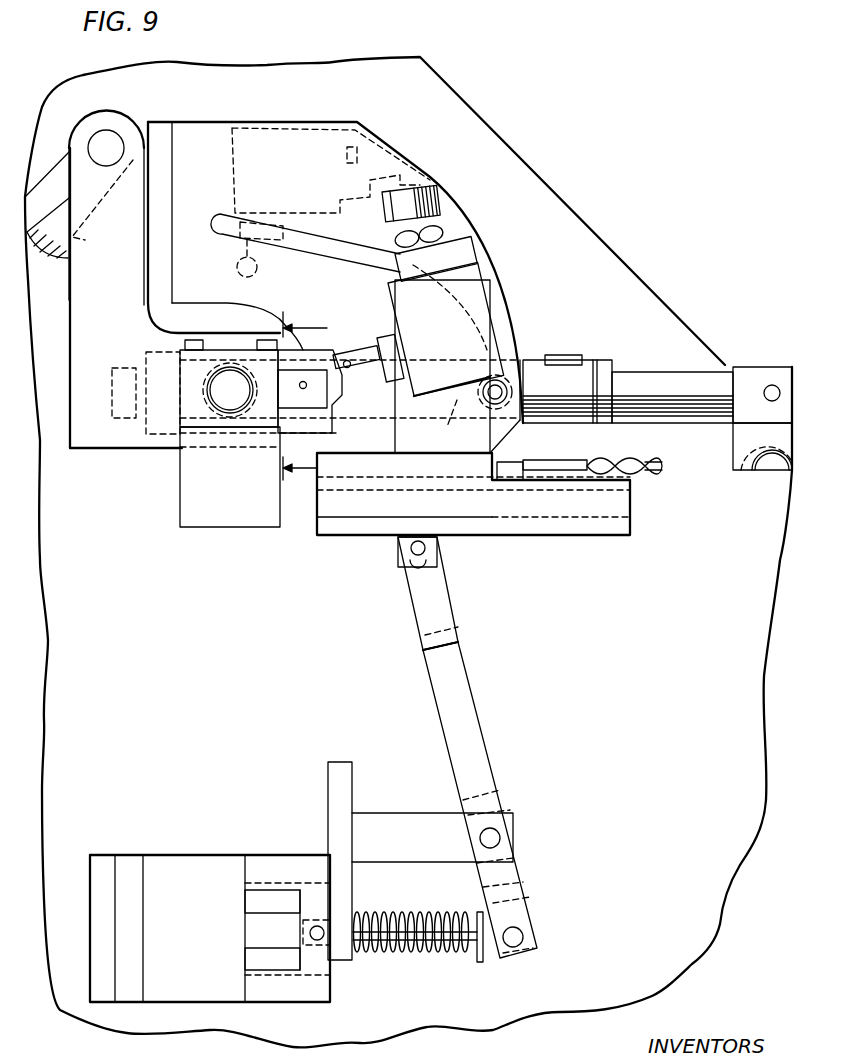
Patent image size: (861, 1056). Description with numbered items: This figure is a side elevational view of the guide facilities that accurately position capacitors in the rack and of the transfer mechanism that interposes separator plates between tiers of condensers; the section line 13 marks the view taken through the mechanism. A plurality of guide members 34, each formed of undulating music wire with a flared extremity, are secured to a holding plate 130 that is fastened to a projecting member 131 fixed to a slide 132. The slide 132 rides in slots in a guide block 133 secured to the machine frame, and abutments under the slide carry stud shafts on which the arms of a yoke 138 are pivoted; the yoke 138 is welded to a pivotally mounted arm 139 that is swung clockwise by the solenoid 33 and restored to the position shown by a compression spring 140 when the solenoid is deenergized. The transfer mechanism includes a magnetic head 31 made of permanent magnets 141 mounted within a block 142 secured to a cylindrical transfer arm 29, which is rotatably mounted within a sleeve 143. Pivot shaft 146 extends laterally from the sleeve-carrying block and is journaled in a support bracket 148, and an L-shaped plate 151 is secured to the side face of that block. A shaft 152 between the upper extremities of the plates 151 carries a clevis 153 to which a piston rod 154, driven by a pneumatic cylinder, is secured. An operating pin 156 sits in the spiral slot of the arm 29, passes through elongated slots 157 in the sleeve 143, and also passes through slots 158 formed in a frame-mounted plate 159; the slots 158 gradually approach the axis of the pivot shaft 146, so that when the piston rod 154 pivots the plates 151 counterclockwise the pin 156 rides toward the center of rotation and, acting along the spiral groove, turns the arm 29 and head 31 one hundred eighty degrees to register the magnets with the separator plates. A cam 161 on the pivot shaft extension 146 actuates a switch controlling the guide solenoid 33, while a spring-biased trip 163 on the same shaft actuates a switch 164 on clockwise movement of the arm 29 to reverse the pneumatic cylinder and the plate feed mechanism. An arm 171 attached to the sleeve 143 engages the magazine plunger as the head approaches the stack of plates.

The section line 13- 13 is at (305, 401).
The transfer arm 29 is at (670, 370).
The magnetic head 31 is at (747, 367).
The solenoid 33 is at (212, 988).
The guide member 34 is at (650, 457).
The holding plate 130 is at (553, 460).
The projecting member 131 is at (512, 467).
The slide 132 is at (614, 483).
The guide block 133 is at (610, 527).
The yoke 138 is at (447, 610).
The pivotally mounted arm 139 is at (480, 757).
The compression spring 140 is at (413, 953).
The permanent magnet 141 is at (743, 473).
The block 142 is at (733, 427).
The sleeve 143 is at (607, 358).
The pivot shaft 146 is at (230, 393).
The support bracket 148 is at (258, 507).
The L-shaped plate 151 is at (86, 318).
The shaft 152 is at (111, 145).
The clevis 153 is at (52, 190).
The piston rod 154 is at (58, 253).
The operating pin 156 is at (523, 388).
The elongated slot 157 is at (350, 366).
The slot 158 is at (490, 327).
The plate 159 is at (470, 233).
The cam 161 is at (330, 350).
The spring-biased trip 163 is at (332, 380).
The switch 164 is at (467, 253).
The arm 171 is at (565, 353).